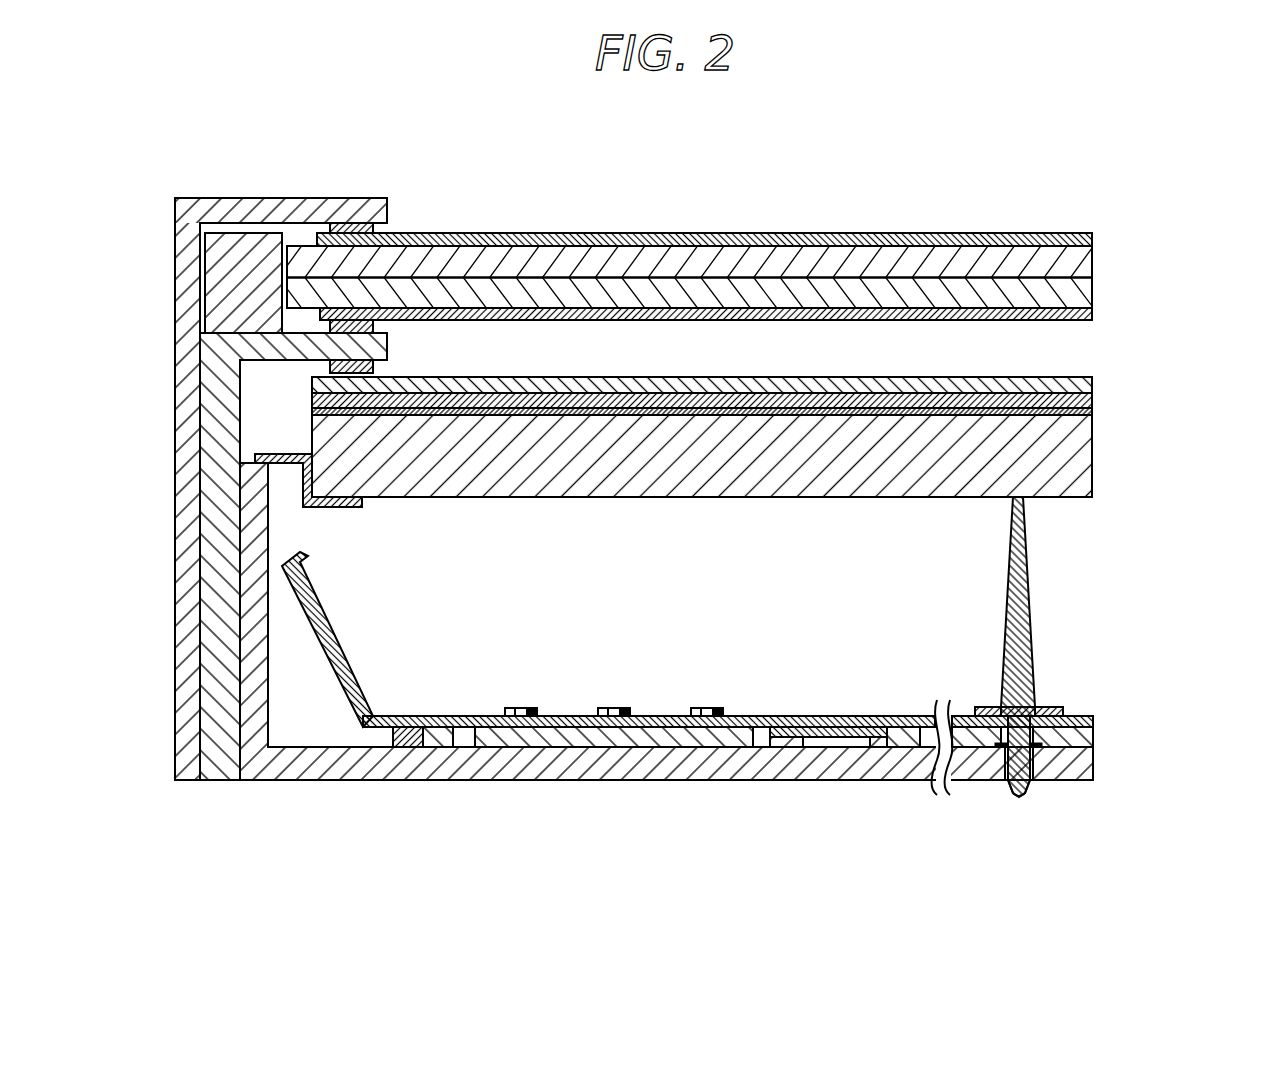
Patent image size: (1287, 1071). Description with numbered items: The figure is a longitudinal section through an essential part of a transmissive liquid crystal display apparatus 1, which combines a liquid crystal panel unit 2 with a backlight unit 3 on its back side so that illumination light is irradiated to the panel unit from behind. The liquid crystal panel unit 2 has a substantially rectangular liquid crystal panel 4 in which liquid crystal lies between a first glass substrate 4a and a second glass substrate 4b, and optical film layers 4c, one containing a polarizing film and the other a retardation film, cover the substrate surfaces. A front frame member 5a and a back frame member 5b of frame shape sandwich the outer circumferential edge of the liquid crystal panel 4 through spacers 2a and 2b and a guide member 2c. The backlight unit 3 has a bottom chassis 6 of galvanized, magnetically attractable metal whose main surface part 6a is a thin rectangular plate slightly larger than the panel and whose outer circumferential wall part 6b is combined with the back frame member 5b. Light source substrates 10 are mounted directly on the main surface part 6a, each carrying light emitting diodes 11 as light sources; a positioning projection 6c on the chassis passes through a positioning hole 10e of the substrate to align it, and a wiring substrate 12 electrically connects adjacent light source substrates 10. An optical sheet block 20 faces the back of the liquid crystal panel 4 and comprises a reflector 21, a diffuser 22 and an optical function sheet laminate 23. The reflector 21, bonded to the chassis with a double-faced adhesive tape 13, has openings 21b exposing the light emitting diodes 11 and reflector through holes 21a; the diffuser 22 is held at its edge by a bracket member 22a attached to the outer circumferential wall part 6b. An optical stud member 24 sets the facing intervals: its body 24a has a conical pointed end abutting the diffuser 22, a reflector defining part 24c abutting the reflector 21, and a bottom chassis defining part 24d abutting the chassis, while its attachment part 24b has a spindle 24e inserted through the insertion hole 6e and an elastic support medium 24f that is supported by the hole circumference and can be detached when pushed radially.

The liquid crystal display apparatus 1 is at (723, 150).
The liquid crystal panel unit 2 is at (96, 250).
The spacer 2a is at (346, 222).
The spacer 2b is at (363, 325).
The guide member 2c is at (240, 250).
The backlight unit 3 is at (827, 808).
The liquid crystal panel 4 is at (283, 278).
The first glass substrate 4a is at (1093, 290).
The second glass substrate 4b is at (1093, 256).
The optical film layer 4c is at (1008, 240).
The front frame member 5a is at (187, 327).
The back frame member 5b is at (218, 421).
The bottom chassis 6 is at (252, 838).
The main surface part 6a is at (403, 780).
The outer circumferential wall part 6b is at (283, 740).
The positioning projection 6c is at (463, 740).
The insertion hole 6e is at (1012, 795).
The light source substrate 10 is at (612, 762).
The positioning hole 10e is at (462, 748).
The light emitting diode 11 is at (520, 708).
The wiring substrate 12 is at (828, 727).
The double-faced adhesive tape 13 is at (410, 727).
The optical sheet block 20 is at (1236, 388).
The reflector 21 is at (1063, 710).
The reflector through hole 21a is at (1003, 690).
The opening 21b is at (532, 708).
The diffuser 22 is at (1065, 463).
The bracket member 22a is at (350, 508).
The optical function sheet laminate 23 is at (1100, 373).
The optical stud member 24 is at (1048, 590).
The body 24a is at (1176, 745).
The attachment part 24b is at (1176, 770).
The reflector defining part 24c is at (1053, 690).
The bottom chassis defining part 24d is at (1090, 717).
The spindle 24e is at (1025, 797).
The support medium 24f is at (1032, 786).